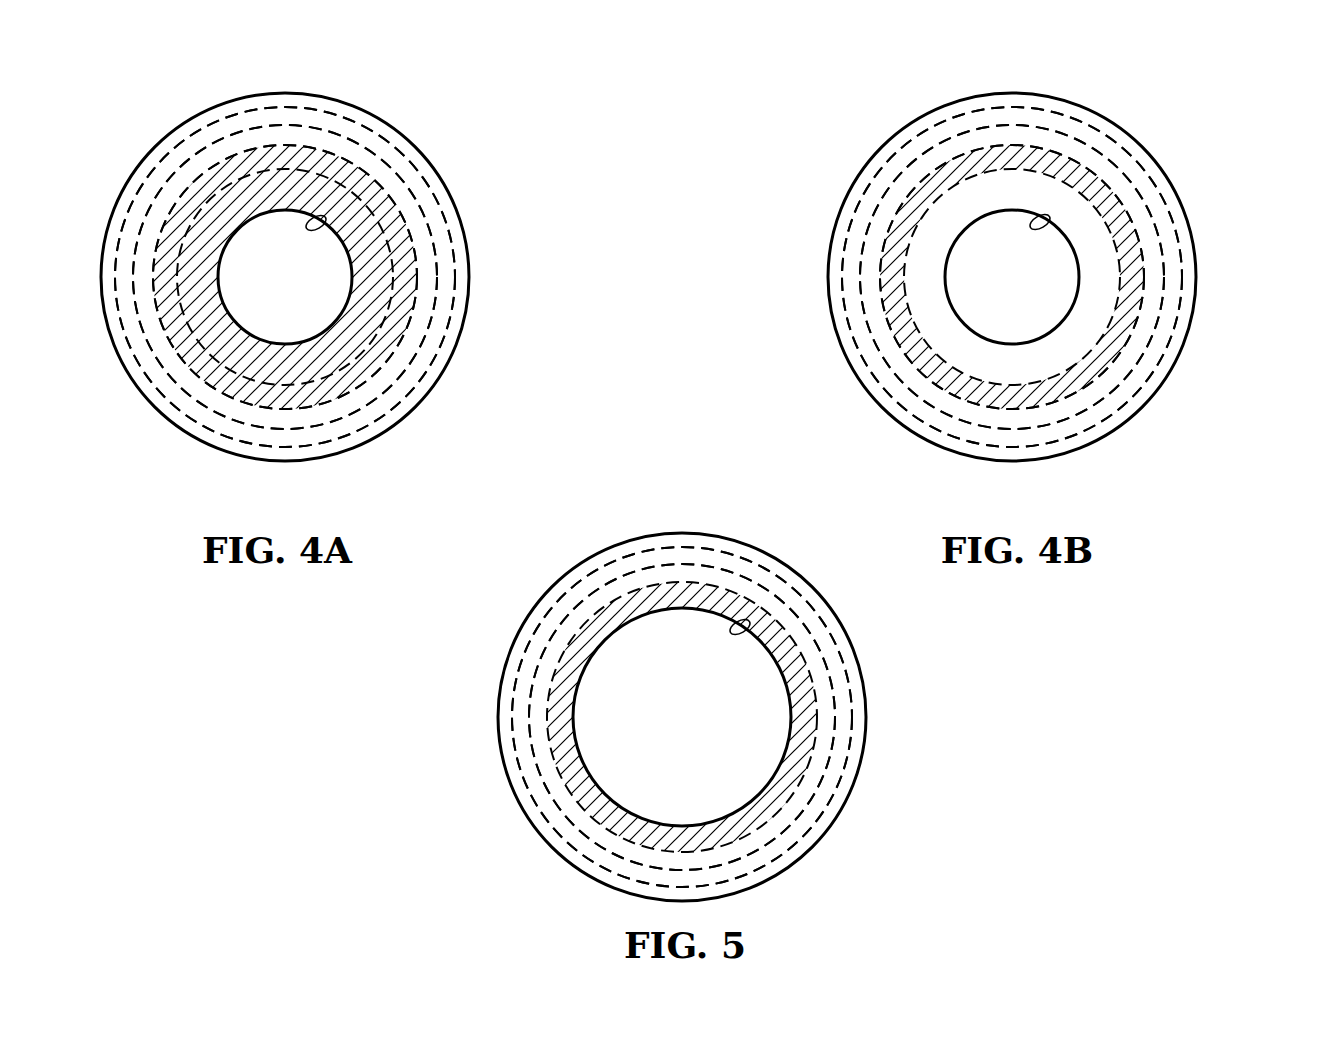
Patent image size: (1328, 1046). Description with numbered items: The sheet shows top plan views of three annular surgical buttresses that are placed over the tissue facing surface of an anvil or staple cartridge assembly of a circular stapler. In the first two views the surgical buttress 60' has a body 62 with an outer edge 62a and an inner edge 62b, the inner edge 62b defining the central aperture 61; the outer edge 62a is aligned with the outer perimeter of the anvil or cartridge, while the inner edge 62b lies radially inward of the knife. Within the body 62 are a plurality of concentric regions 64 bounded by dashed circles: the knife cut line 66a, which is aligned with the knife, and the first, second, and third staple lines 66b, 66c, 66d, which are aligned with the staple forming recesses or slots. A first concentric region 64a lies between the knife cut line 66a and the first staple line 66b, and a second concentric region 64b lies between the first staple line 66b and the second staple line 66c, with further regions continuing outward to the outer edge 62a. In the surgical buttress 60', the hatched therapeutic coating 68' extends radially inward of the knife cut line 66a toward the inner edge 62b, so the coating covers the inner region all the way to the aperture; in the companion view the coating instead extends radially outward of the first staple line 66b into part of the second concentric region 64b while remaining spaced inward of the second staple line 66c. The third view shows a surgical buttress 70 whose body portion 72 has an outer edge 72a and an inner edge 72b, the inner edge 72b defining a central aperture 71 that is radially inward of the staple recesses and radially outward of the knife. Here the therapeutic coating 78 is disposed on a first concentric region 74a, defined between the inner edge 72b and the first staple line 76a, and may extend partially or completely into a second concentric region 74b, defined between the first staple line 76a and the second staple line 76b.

In FIG. 4A, the surgical buttress 60' is at (285, 258).
In FIG. 4A, the central aperture 61 is at (298, 288).
In FIG. 4B, the central aperture 61 is at (1025, 288).
In FIG. 4A, the body 62 is at (328, 122).
In FIG. 4B, the body 62 is at (1053, 122).
In FIG. 4A, the outer edge 62a is at (290, 92).
In FIG. 4B, the outer edge 62a is at (1015, 92).
In FIG. 4A, the inner edge 62b is at (324, 222).
In FIG. 4B, the inner edge 62b is at (1050, 222).
In FIG. 4A, the concentric regions 64 is at (453, 212).
In FIG. 4B, the concentric regions 64 is at (1175, 212).
In FIG. 4A, the first concentric region 64a is at (403, 257).
In FIG. 4B, the first concentric region 64a is at (1140, 253).
In FIG. 4A, the second concentric region 64b is at (285, 277).
In FIG. 4B, the second concentric region 64b is at (1157, 283).
In FIG. 4A, the knife cut line 66a is at (333, 385).
In FIG. 4B, the knife cut line 66a is at (1060, 385).
In FIG. 4A, the first staple line 66b is at (363, 395).
In FIG. 4B, the first staple line 66b is at (1090, 395).
In FIG. 4A, the second staple line 66c is at (393, 397).
In FIG. 4B, the second staple line 66c is at (1118, 398).
In FIG. 4A, the third staple line 66d is at (425, 392).
In FIG. 4B, the third staple line 66d is at (1150, 392).
In FIG. 4A, the therapeutic coating 68' is at (285, 323).
In FIG. 5, the surgical buttress 70 is at (582, 549).
In FIG. 5, the central aperture 71 is at (694, 728).
In FIG. 5, the body portion 72 is at (725, 560).
In FIG. 5, the outer edge 72a is at (687, 534).
In FIG. 5, the inner edge 72b is at (750, 630).
In FIG. 5, the first concentric region 74a is at (790, 660).
In FIG. 5, the second concentric region 74b is at (823, 702).
In FIG. 5, the first staple line 76a is at (760, 835).
In FIG. 5, the second staple line 76b is at (788, 835).
In FIG. 5, the therapeutic coating 78 is at (583, 790).